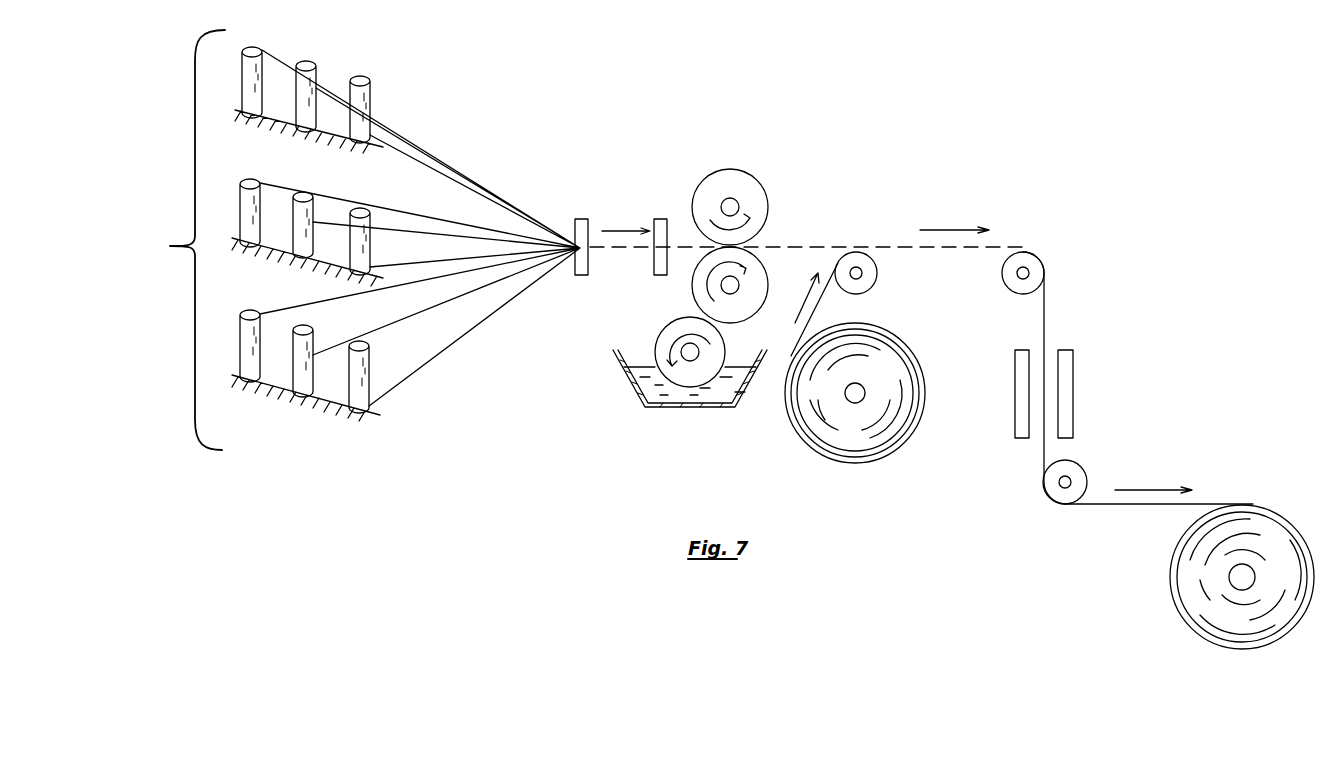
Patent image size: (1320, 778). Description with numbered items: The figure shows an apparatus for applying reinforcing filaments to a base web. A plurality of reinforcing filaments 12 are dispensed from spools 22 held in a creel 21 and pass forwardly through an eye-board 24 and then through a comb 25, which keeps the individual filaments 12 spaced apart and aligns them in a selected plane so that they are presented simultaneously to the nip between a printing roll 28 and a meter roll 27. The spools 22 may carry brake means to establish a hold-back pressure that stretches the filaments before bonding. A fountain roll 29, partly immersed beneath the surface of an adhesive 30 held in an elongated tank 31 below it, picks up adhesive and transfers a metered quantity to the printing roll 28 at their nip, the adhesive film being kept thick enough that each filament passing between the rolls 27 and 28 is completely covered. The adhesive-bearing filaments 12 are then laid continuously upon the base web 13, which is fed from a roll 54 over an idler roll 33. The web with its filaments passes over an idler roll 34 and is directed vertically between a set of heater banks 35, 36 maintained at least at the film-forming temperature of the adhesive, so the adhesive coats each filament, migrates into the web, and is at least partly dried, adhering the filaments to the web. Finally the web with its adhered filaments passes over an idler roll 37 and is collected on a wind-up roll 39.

The reinforcing filaments 12 is at (413, 218).
The base web 13 is at (815, 308).
The creel 21 is at (182, 240).
The spools 22 is at (310, 63).
The eye-board 24 is at (586, 218).
The comb 25 is at (661, 218).
The meter roll 27 is at (733, 176).
The printing roll 28 is at (692, 287).
The fountain roll 29 is at (656, 337).
The adhesive 30 is at (647, 380).
The elongated tank 31 is at (665, 408).
The idler roll 33 is at (879, 273).
The idler roll 34 is at (1003, 267).
The heater bank 35 is at (1074, 393).
The heater bank 36 is at (1015, 383).
The idler roll 37 is at (1080, 464).
The wind-up roll 39 is at (1254, 512).
The roll 54 is at (792, 410).